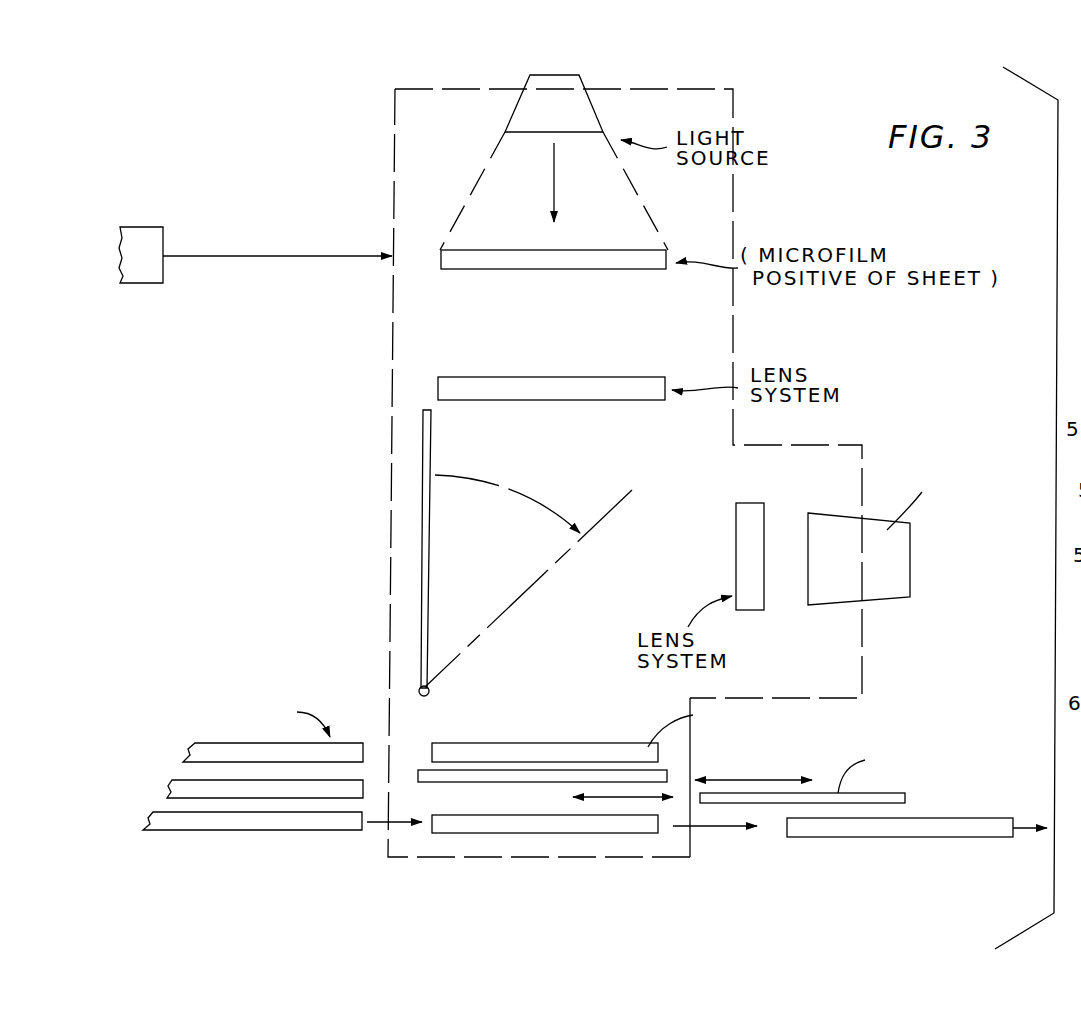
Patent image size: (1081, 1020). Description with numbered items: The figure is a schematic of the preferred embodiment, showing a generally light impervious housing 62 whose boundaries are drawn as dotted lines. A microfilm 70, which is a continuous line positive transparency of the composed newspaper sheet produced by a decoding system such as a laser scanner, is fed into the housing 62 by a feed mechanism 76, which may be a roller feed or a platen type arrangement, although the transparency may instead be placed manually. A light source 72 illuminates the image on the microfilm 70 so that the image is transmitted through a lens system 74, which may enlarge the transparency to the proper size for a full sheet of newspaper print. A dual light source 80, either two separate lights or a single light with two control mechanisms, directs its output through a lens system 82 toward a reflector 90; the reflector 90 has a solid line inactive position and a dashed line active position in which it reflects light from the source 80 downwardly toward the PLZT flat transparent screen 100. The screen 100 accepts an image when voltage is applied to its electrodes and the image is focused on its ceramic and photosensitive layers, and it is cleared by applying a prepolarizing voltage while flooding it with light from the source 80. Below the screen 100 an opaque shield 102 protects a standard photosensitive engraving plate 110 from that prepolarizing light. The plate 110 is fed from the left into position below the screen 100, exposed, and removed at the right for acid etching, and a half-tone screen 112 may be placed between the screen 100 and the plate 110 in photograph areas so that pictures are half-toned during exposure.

The housing 62 is at (490, 47).
The light source 72 is at (583, 118).
The microfilm 70 is at (638, 264).
The feed mechanism 76 is at (145, 227).
The lens system 74 is at (646, 343).
The reflector 90 is at (433, 449).
The lens system 82 is at (736, 562).
The dual light source 80 is at (902, 576).
The PLZT flat transparent screen 100 is at (483, 743).
The opaque shield 102 is at (582, 777).
The half-tone screen 112 is at (905, 795).
The engraving plate 110 is at (190, 750).